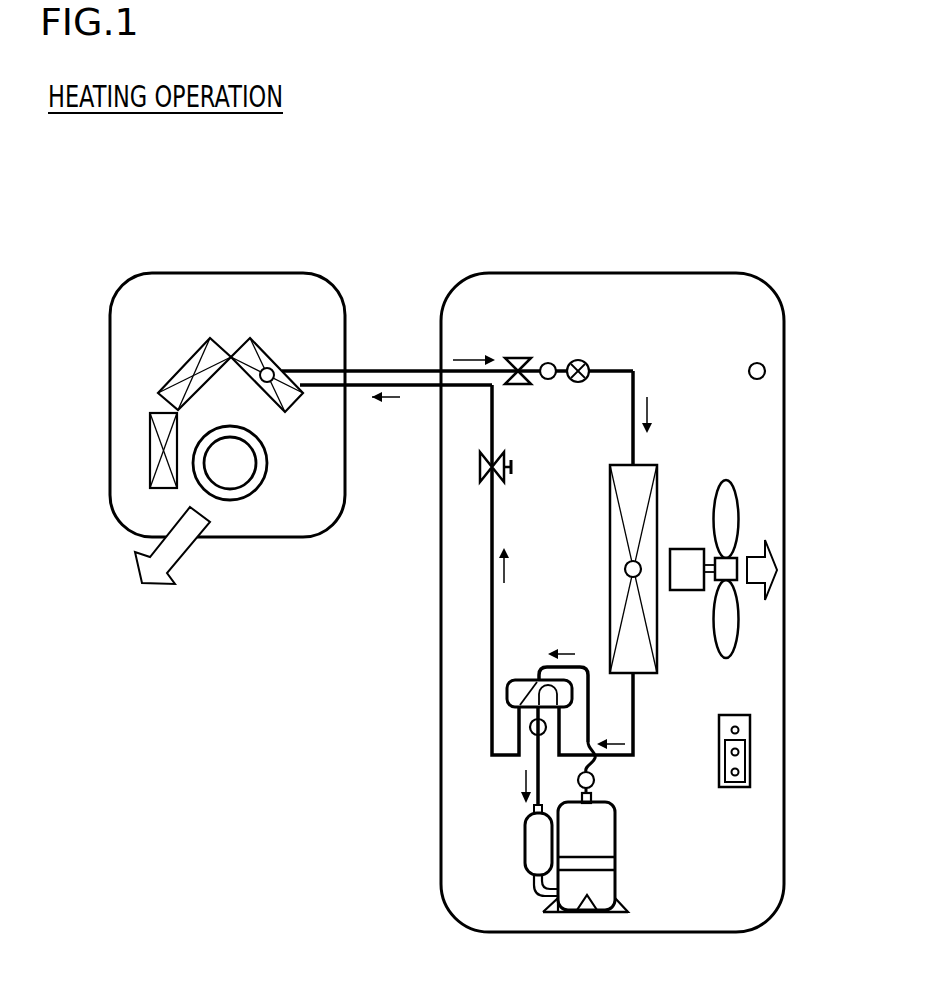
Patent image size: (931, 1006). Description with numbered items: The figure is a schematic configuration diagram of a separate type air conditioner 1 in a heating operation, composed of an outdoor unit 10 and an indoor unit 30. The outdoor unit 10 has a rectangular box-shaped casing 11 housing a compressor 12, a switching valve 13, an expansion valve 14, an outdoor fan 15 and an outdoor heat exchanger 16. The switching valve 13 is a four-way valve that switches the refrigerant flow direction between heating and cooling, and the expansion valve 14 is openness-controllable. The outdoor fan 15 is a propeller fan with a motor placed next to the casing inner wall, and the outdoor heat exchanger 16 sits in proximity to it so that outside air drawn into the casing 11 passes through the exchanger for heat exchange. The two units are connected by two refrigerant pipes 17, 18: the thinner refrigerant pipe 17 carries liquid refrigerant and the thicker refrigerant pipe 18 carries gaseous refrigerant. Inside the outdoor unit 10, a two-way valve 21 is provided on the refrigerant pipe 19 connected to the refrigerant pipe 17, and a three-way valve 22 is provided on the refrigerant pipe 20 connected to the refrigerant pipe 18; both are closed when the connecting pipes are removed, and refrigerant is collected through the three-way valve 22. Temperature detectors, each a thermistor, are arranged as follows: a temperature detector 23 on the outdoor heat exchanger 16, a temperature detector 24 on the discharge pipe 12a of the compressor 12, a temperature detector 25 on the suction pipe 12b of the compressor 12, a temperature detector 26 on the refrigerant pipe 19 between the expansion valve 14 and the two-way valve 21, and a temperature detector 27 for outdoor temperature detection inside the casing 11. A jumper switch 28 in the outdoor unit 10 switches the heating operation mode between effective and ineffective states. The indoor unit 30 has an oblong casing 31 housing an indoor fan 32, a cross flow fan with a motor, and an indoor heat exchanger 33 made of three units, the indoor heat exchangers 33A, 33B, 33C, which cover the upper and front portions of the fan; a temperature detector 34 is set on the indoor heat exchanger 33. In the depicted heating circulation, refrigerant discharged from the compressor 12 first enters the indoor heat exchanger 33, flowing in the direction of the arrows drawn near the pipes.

The air conditioner 1 is at (127, 214).
The outdoor unit 10 is at (451, 272).
The casing 11 is at (613, 272).
The compressor 12 is at (616, 839).
The discharge pipe 12a is at (592, 798).
The suction pipe 12b is at (537, 740).
The switching valve 13 is at (515, 682).
The expansion valve 14 is at (588, 363).
The outdoor fan 15 is at (718, 475).
The outdoor heat exchanger 16 is at (609, 507).
The refrigerant pipe 17 is at (399, 369).
The refrigerant pipe 18 is at (418, 388).
The refrigerant pipe 19 is at (632, 421).
The refrigerant pipe 20 is at (490, 545).
The two-way valve 21 is at (519, 357).
The three-way valve 22 is at (500, 457).
The temperature detector 23 is at (624, 569).
The temperature detector 24 is at (595, 777).
The temperature detector 25 is at (530, 727).
The temperature detector 26 is at (553, 380).
The temperature detector 27 is at (748, 371).
The jumper switch 28 is at (737, 788).
The indoor unit 30 is at (116, 273).
The casing 31 is at (226, 272).
The indoor fan 32 is at (268, 481).
The indoor heat exchanger 33 is at (176, 348).
The indoor heat exchanger 33A is at (277, 359).
The indoor heat exchanger 33B is at (176, 372).
The indoor heat exchanger 33C is at (150, 462).
The temperature detector 34 is at (272, 380).